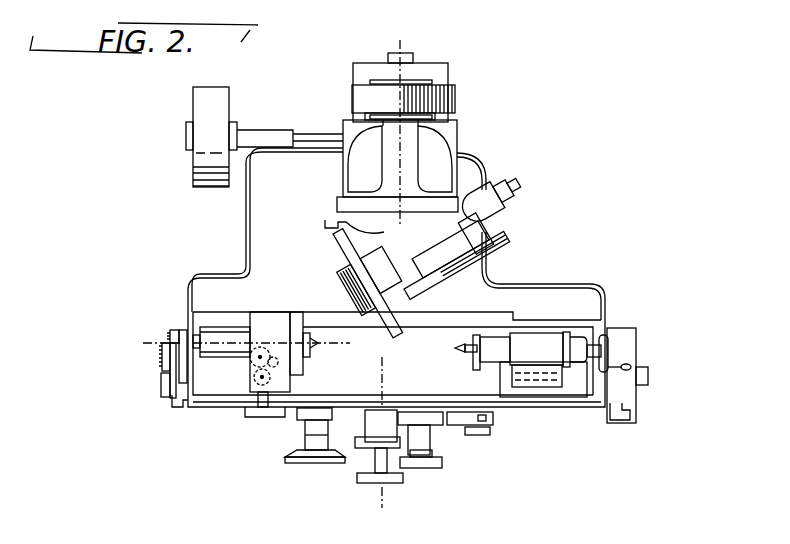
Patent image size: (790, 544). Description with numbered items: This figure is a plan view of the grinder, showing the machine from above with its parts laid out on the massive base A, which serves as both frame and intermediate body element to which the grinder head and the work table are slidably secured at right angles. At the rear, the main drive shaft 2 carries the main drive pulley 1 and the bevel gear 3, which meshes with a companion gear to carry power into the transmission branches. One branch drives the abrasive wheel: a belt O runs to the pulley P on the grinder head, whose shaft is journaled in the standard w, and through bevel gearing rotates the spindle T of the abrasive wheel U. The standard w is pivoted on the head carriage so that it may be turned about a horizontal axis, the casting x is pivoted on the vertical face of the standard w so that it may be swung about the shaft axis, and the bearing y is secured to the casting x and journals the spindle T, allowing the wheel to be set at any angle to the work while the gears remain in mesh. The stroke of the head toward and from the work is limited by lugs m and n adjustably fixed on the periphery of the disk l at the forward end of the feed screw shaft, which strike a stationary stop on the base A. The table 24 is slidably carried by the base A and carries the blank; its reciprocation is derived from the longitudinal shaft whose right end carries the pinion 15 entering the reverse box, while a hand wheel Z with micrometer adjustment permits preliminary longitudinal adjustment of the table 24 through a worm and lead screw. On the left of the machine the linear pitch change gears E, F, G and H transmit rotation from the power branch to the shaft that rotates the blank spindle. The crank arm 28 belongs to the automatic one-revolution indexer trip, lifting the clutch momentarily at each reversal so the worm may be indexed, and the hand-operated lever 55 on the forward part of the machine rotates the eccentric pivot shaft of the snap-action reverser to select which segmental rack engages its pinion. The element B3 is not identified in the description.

The main drive pulley 1 is at (211, 137).
The main drive shaft 2 is at (309, 145).
The pinion 15 is at (392, 275).
The pulley P is at (431, 80).
The belt O is at (452, 100).
The standard w is at (397, 162).
The casting x is at (368, 232).
The bearing y is at (465, 262).
The spindle T is at (485, 238).
The abrasive wheel U is at (387, 314).
The base A is at (552, 290).
The bevel gear 3 is at (247, 352).
The change gear F is at (166, 334).
The change gear G is at (162, 356).
The change gear H is at (161, 381).
The change gear E is at (178, 407).
The table 24 is at (507, 364).
The crank arm 28 is at (263, 413).
The pedestal B3 is at (315, 446).
The disk l is at (372, 449).
The lug m is at (360, 440).
The lug n is at (381, 426).
The hand wheel Z is at (438, 462).
The hand-operated lever 55 is at (471, 434).